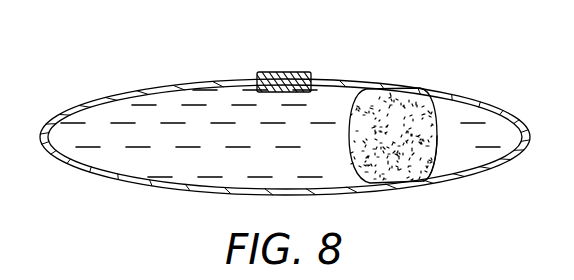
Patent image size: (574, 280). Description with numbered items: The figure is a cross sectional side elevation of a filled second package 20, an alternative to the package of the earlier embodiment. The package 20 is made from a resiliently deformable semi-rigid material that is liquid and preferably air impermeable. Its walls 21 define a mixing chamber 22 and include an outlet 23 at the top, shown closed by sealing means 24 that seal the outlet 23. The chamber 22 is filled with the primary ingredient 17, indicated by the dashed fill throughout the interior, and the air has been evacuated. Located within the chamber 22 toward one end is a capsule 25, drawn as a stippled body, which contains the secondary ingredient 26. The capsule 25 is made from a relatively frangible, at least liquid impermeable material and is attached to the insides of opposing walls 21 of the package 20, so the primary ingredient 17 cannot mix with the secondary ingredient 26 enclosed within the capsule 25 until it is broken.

The primary ingredient 17 is at (103, 153).
The second package 20 is at (285, 126).
The walls 21 is at (112, 96).
The mixing chamber 22 is at (422, 161).
The outlet 23 is at (269, 54).
The sealing means 24 is at (282, 72).
The capsule 25 is at (436, 162).
The secondary ingredient 26 is at (391, 176).